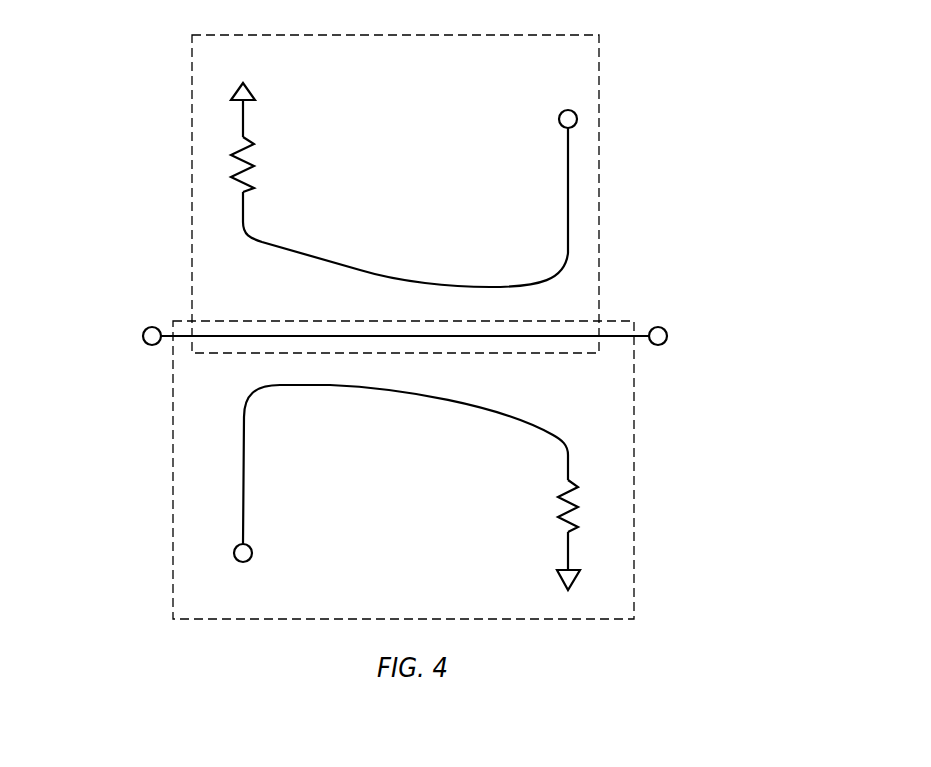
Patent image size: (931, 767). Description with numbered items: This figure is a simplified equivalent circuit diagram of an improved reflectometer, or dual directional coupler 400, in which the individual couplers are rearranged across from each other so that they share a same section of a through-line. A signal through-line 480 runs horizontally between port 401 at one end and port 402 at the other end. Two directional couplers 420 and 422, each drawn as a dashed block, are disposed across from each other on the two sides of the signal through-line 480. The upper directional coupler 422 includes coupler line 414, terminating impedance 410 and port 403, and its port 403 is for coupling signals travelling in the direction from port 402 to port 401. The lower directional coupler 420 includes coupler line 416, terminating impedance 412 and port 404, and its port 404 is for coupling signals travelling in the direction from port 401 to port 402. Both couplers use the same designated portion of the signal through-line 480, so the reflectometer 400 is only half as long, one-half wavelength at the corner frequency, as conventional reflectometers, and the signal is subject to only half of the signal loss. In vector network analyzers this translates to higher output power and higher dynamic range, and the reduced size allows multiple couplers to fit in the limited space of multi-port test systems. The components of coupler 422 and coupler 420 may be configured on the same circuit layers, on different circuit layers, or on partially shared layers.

The dual directional coupler 400 is at (731, 35).
The port 401 is at (146, 332).
The port 402 is at (667, 330).
The port 403 is at (560, 112).
The port 404 is at (247, 541).
The terminating impedance 410 is at (247, 136).
The terminating impedance 412 is at (568, 524).
The coupler line 414 is at (404, 276).
The coupler line 416 is at (463, 401).
The directional coupler 420 is at (433, 610).
The directional coupler 422 is at (421, 70).
The signal through-line 480 is at (522, 337).